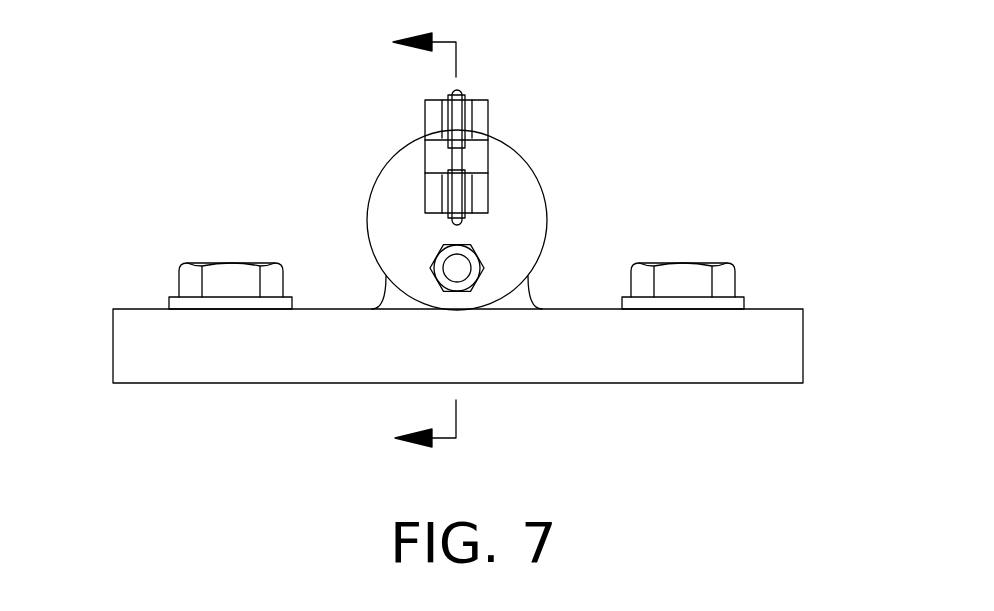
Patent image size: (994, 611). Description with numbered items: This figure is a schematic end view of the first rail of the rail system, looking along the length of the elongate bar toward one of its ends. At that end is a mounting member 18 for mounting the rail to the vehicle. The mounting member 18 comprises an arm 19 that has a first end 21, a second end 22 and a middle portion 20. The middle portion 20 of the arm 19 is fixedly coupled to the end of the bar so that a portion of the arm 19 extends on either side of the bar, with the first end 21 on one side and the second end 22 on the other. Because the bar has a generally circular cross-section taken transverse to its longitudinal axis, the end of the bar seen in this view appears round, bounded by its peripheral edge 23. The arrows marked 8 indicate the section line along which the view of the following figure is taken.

The section line 8- 8 is at (446, 245).
The mounting member 18 is at (217, 383).
The arm 19 is at (322, 367).
The middle portion 20 is at (502, 363).
The first end 21 is at (792, 350).
The second end 22 is at (125, 358).
The peripheral edge 23 is at (520, 158).